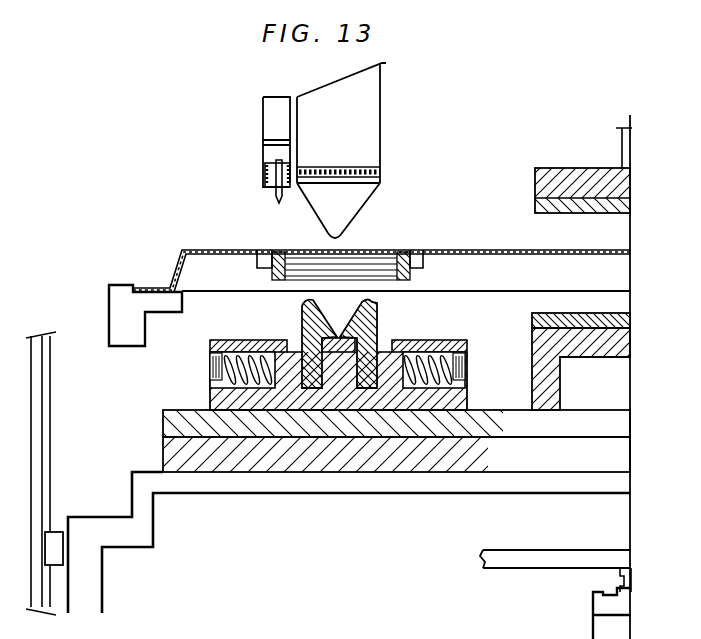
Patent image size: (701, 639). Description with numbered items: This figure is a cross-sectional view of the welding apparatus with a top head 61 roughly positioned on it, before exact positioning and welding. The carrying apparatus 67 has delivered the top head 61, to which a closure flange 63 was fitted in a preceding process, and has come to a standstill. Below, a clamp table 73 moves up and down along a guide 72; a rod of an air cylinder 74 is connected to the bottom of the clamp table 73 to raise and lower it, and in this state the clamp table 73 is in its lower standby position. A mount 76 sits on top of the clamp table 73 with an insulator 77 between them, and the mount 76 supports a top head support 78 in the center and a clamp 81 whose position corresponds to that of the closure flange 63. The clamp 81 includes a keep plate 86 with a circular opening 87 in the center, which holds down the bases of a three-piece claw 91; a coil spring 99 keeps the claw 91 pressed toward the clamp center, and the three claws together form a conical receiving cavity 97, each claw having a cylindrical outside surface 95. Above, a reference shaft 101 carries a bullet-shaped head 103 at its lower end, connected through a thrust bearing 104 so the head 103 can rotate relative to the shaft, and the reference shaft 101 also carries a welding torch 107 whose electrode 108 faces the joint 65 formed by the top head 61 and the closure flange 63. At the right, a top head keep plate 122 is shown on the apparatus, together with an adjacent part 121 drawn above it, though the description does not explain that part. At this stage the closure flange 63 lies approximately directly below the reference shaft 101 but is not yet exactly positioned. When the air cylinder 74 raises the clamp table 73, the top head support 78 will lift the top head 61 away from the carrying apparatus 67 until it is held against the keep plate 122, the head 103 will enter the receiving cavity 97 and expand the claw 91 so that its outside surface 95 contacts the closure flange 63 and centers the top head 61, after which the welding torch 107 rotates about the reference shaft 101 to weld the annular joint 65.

The reference shaft 101 is at (368, 100).
The head 103 is at (358, 192).
The thrust bearing 104 is at (373, 167).
The welding torch 107 is at (273, 119).
The electrode 108 is at (270, 192).
The rod 121 is at (631, 143).
The top head keep plate 122 is at (620, 213).
The top head 61 is at (614, 271).
The closure flange 63 is at (411, 250).
The joint 65 is at (275, 250).
The carrying apparatus 67 is at (133, 347).
The conical receiving cavity 97 is at (338, 315).
The cylindrical outside surface 95 is at (372, 306).
The clamp 81 is at (468, 397).
The coil spring 99 is at (222, 352).
The keep plate 86 is at (281, 344).
The circular opening 87 is at (388, 351).
The three-piece claw 91 is at (383, 347).
The top head support 78 is at (613, 358).
The mount 76 is at (610, 423).
The insulator 77 is at (457, 460).
The clamp table 73 is at (148, 524).
The guide 72 is at (48, 510).
The air cylinder 74 is at (623, 626).